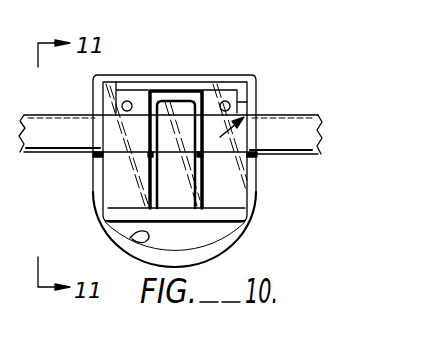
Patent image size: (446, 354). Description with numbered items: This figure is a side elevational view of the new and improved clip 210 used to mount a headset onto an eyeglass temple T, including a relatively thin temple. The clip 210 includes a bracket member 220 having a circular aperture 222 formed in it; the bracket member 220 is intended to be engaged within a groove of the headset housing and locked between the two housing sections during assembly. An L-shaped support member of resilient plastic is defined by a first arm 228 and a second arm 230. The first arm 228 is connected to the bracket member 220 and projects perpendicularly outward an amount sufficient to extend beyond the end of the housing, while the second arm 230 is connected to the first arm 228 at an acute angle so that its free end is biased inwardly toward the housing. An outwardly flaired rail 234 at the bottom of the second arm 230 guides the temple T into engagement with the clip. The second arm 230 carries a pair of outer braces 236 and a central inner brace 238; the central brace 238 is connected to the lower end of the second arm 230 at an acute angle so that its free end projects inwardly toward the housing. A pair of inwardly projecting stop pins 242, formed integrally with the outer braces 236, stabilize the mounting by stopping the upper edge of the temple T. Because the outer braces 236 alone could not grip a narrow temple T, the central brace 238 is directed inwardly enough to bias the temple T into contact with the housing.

The clip 210 is at (250, 42).
The bracket member 220 is at (217, 247).
The circular aperture 222 is at (140, 234).
The first arm 228 is at (255, 78).
The second arm 230 is at (252, 110).
The outwardly flaired rail 234 is at (248, 217).
The outer braces 236 is at (117, 172).
The central inner brace 238 is at (182, 105).
The stop pins 242 is at (127, 101).
The temple T is at (42, 138).